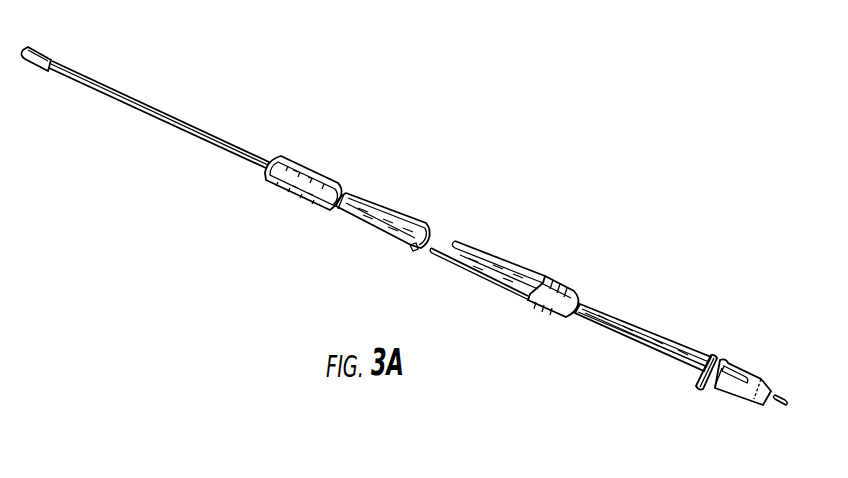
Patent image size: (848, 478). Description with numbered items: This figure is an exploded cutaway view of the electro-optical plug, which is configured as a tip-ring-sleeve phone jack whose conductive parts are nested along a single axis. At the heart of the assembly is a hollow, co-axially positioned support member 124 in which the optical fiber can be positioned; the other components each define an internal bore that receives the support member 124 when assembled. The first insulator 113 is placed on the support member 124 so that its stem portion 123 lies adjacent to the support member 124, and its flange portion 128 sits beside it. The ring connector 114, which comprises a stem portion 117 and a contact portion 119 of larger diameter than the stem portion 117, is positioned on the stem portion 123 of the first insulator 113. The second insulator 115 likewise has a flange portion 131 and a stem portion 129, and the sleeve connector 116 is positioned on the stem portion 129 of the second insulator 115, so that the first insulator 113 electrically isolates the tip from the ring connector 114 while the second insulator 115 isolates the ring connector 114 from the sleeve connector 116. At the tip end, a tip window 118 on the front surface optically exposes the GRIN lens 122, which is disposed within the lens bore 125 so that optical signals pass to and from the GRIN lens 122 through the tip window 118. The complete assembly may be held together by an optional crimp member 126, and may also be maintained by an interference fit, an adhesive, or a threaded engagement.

The first insulator 113 is at (633, 314).
The ring connector 114 is at (513, 252).
The second insulator 115 is at (392, 186).
The sleeve connector 116 is at (306, 160).
The stem portion 117 is at (488, 249).
The tip window 118 is at (750, 394).
The contact portion 119 is at (527, 296).
The GRIN lens 122 is at (768, 384).
The stem portion 123 is at (602, 320).
The support member 124 is at (152, 102).
The lens bore 125 is at (751, 375).
The crimp member 126 is at (33, 45).
The flange portion 128 is at (692, 379).
The stem portion 129 is at (332, 200).
The flange portion 131 is at (403, 241).